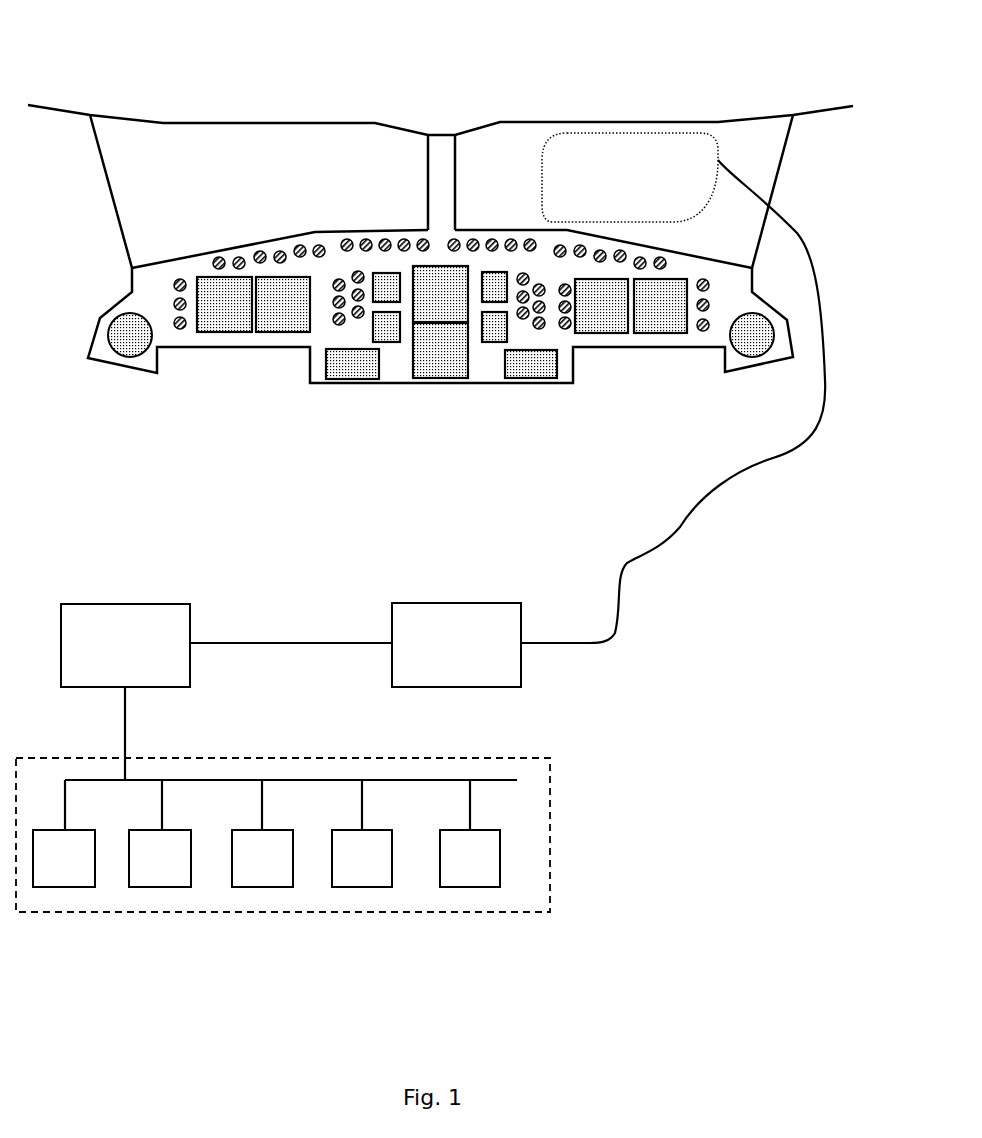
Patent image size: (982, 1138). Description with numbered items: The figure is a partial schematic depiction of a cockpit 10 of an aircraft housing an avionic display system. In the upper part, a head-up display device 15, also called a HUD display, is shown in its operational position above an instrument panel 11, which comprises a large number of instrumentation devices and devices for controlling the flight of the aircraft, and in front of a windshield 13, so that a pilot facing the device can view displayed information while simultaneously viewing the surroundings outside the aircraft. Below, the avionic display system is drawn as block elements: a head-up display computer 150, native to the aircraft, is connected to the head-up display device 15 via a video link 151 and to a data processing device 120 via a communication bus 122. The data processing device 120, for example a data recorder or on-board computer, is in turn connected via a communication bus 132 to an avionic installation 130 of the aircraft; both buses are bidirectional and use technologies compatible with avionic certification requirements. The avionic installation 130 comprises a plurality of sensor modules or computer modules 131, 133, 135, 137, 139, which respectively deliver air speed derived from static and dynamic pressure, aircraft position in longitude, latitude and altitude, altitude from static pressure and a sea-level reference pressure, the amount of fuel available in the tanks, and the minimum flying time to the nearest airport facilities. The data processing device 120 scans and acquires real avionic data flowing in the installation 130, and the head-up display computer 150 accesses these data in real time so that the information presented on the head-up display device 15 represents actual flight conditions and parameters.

The cockpit 10 is at (250, 85).
The instrument panel 11 is at (167, 267).
The windshield 13 is at (367, 157).
The head-up display device 15 is at (608, 152).
The data processing device 120 is at (125, 645).
The communication bus 122 is at (273, 640).
The avionic installation 130 is at (552, 877).
The sensor module 131 is at (82, 888).
The communication bus 132 is at (123, 714).
The sensor module 133 is at (173, 888).
The sensor module 135 is at (272, 888).
The sensor module 137 is at (373, 888).
The computer module 139 is at (482, 888).
The head-up display computer 150 is at (456, 645).
The video link 151 is at (825, 387).